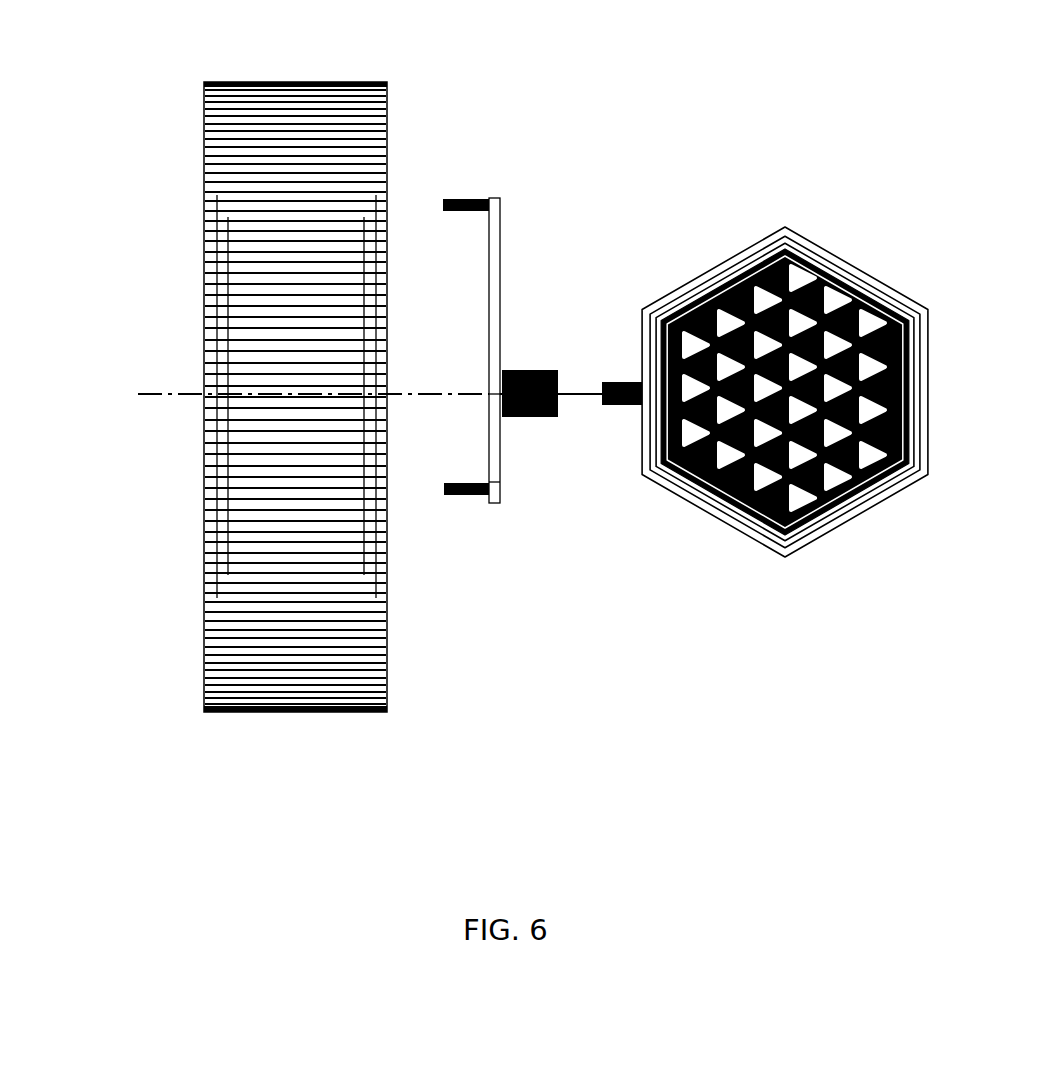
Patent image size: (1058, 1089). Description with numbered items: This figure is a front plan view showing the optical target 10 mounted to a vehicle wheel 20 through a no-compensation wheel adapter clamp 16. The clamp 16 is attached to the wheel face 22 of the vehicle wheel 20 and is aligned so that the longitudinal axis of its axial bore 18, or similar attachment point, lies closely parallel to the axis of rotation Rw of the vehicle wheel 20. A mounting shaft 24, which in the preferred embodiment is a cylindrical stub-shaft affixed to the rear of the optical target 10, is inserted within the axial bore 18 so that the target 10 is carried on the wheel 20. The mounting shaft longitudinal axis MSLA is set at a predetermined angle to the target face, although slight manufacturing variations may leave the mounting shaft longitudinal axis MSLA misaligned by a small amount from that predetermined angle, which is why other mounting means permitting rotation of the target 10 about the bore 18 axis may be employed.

The optical target 10 is at (827, 245).
The no-compensation wheel adapter clamp 16 is at (500, 265).
The axial bore 18 is at (517, 372).
The vehicle wheel 20 is at (285, 102).
The wheel face 22 is at (378, 228).
The mounting shaft 24 is at (632, 407).
The axis of rotation Rw is at (180, 396).
The mounting shaft longitudinal axis MSLA is at (586, 395).